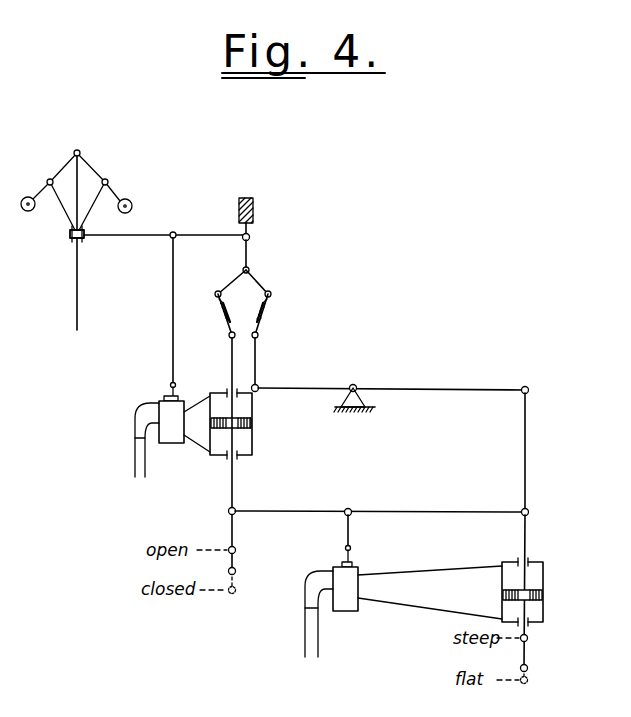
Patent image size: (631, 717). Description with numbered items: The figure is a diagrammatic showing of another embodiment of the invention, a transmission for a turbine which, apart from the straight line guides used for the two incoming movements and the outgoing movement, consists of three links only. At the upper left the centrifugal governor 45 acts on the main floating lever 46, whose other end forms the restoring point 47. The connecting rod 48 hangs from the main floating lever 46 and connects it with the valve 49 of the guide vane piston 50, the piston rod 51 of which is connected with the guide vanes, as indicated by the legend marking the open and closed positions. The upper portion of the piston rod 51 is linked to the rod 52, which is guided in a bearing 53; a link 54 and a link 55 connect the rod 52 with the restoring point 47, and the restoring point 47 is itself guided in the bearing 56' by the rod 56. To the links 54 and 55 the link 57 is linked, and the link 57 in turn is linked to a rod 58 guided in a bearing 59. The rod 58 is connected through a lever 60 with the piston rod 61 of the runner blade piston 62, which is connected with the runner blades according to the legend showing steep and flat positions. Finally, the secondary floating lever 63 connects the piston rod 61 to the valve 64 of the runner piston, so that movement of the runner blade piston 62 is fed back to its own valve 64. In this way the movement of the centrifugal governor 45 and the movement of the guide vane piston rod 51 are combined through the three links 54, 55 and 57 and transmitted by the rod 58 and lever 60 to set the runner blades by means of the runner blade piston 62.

The centrifugal governor 45 is at (97, 176).
The main floating lever 46 is at (160, 231).
The restoring point 47 is at (231, 255).
The connecting rod 48 is at (170, 325).
The valve 49 is at (177, 403).
The guide vane piston 50 is at (252, 426).
The piston rod 51 is at (231, 490).
The rod 52 is at (221, 305).
The bearing 53 is at (224, 319).
The link 54 is at (232, 287).
The link 55 is at (249, 255).
The rod 56 is at (264, 229).
The bearing 56' is at (232, 210).
The link 57 is at (263, 291).
The rod 58 is at (272, 306).
The bearing 59 is at (270, 319).
The lever 60 is at (433, 391).
The piston rod 61 is at (527, 486).
The runner blade piston 62 is at (535, 591).
The secondary floating lever 63 is at (412, 513).
The valve 64 is at (358, 577).